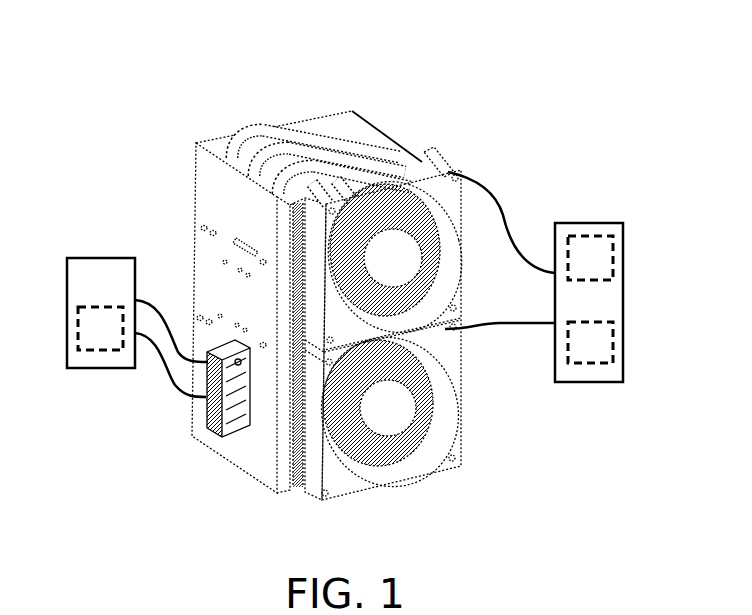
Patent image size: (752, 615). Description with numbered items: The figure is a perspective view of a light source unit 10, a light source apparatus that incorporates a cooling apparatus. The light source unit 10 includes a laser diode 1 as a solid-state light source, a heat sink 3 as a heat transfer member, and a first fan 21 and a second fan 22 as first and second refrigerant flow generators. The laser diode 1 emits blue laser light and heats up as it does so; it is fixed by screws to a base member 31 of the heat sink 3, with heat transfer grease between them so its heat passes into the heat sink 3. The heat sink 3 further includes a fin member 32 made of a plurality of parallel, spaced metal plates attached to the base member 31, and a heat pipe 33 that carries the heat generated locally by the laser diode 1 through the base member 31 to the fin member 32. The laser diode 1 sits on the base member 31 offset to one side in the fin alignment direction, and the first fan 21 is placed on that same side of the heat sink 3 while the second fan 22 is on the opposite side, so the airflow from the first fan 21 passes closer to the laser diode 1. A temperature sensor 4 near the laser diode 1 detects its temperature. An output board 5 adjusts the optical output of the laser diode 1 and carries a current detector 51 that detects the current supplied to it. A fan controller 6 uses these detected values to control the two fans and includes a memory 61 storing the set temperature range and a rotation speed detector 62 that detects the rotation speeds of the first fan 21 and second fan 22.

The light source unit 10 is at (168, 70).
The laser diode 1 is at (222, 397).
The first fan 21 is at (447, 447).
The second fan 22 is at (413, 170).
The heat sink 3 is at (208, 65).
The base member 31 is at (205, 147).
The fin member 32 is at (370, 128).
The heat pipe 33 is at (277, 135).
The temperature sensor 4 is at (238, 357).
The output board 5 is at (78, 258).
The current detector 51 is at (98, 345).
The fan controller 6 is at (625, 303).
The memory 61 is at (590, 350).
The rotation speed detector 62 is at (583, 248).